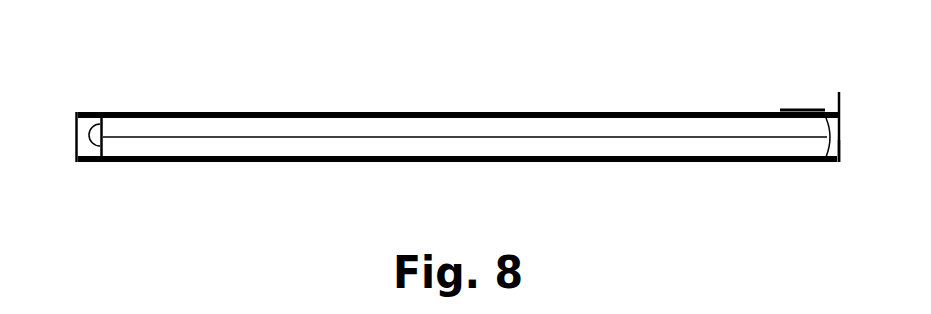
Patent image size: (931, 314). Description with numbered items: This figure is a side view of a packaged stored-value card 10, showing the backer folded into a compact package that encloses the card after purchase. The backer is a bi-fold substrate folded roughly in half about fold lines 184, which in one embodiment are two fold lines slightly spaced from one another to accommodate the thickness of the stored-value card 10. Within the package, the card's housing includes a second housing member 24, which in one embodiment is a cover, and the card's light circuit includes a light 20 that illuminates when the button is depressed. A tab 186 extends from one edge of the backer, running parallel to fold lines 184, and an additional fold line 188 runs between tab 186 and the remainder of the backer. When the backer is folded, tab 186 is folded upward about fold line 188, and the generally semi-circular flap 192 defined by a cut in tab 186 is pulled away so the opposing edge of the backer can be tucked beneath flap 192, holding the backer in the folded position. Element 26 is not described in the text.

The stored-value card 10 is at (405, 120).
The light 20 is at (93, 128).
The second housing member 24 is at (645, 130).
The outer wall 26 is at (612, 148).
The fold lines 184 is at (75, 112).
The tab 186 is at (840, 135).
The fold line 188 is at (839, 162).
The flap 192 is at (811, 110).